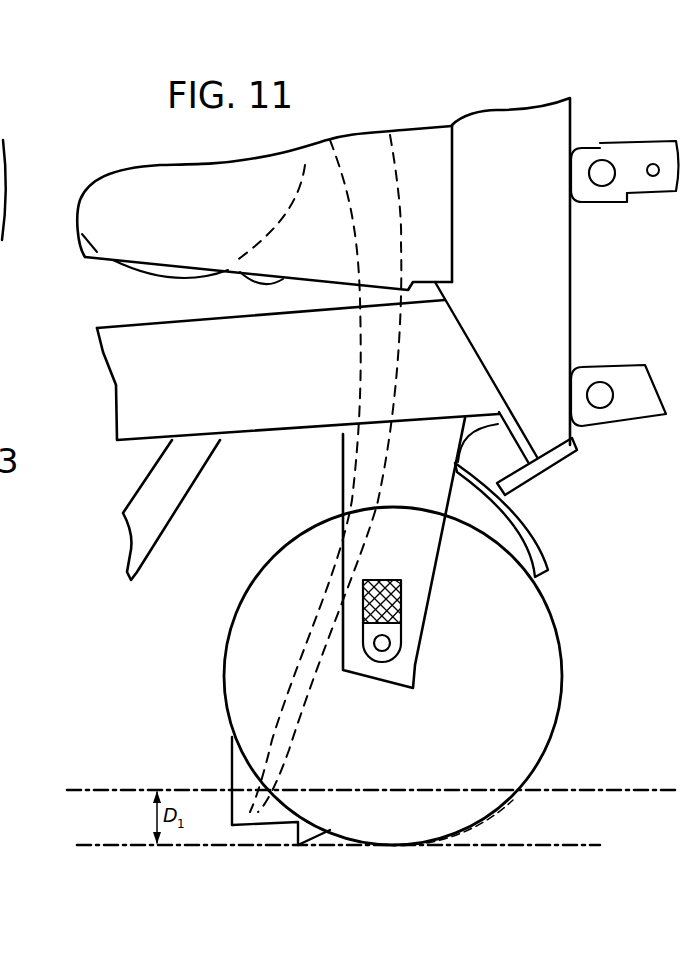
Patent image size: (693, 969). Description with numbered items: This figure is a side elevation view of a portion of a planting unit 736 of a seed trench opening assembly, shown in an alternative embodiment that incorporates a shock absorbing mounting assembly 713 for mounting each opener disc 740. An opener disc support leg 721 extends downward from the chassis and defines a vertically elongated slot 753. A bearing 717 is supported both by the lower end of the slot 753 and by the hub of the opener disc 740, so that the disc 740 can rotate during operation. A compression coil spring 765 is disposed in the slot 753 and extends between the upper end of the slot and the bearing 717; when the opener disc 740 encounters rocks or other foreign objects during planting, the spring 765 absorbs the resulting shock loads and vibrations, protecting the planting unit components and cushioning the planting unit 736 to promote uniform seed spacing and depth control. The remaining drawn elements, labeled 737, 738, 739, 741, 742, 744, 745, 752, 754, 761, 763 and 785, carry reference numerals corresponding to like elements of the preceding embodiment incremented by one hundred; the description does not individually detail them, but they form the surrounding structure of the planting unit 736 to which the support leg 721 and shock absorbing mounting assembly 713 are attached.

The shock absorbing mounting assembly 713 is at (436, 637).
The bearing 717 is at (405, 657).
The opener disc support leg 721 is at (438, 567).
The planting unit 736 is at (572, 241).
The foot pad 737 is at (84, 265).
The roller assembly 738 is at (454, 706).
The frame 739 is at (540, 200).
The opener disc 740 is at (548, 615).
The tread surface 741 is at (468, 828).
The wedge stop 742 is at (334, 871).
The stop block 744 is at (232, 802).
The lower surface 745 is at (237, 847).
The shoe outline 752 is at (303, 195).
The vertically elongated slot 753 is at (356, 614).
The platform board 754 is at (357, 348).
The upper mounting bracket 761 is at (650, 200).
The lower mounting bracket 763 is at (650, 428).
The compression coil spring 765 is at (400, 580).
The reference plane 785 is at (600, 792).